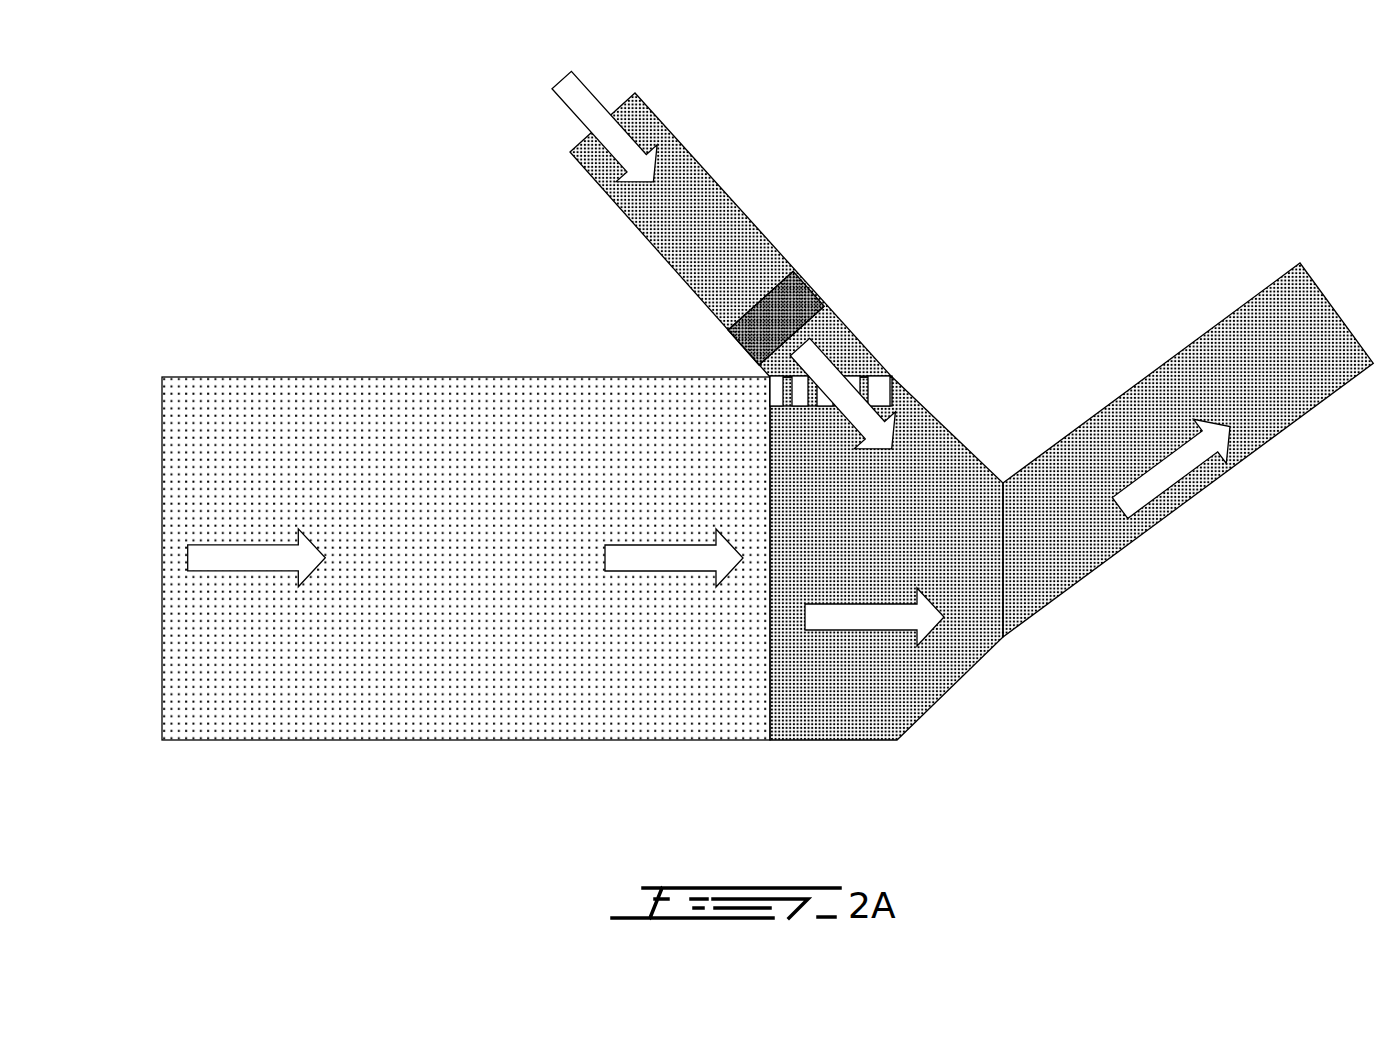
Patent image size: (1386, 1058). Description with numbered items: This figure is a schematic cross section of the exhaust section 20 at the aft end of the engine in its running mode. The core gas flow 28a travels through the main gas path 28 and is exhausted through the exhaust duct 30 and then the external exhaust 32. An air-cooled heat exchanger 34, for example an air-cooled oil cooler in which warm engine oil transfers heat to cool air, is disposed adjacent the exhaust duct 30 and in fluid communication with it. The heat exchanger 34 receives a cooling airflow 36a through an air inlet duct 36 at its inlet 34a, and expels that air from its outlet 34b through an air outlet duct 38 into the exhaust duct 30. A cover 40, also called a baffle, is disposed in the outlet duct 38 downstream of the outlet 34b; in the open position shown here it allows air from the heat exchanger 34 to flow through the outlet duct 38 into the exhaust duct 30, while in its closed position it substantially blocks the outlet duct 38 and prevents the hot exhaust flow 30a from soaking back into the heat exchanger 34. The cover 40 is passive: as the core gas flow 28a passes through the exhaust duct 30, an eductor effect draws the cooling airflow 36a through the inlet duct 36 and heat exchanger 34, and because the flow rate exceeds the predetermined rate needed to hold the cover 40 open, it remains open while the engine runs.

The exhaust section 20 is at (1123, 166).
The main gas path 28 is at (388, 683).
The core gas flow 28a is at (248, 562).
The exhaust duct 30 is at (852, 709).
The exhaust flow 30a is at (888, 616).
The external exhaust 32 is at (1078, 556).
The air-cooled heat exchanger 34 is at (828, 277).
The inlet 34a is at (757, 300).
The outlet 34b is at (812, 322).
The air inlet duct 36 is at (742, 174).
The cooling airflow 36a is at (585, 108).
The air outlet duct 38 is at (901, 346).
The cover 40 is at (910, 394).